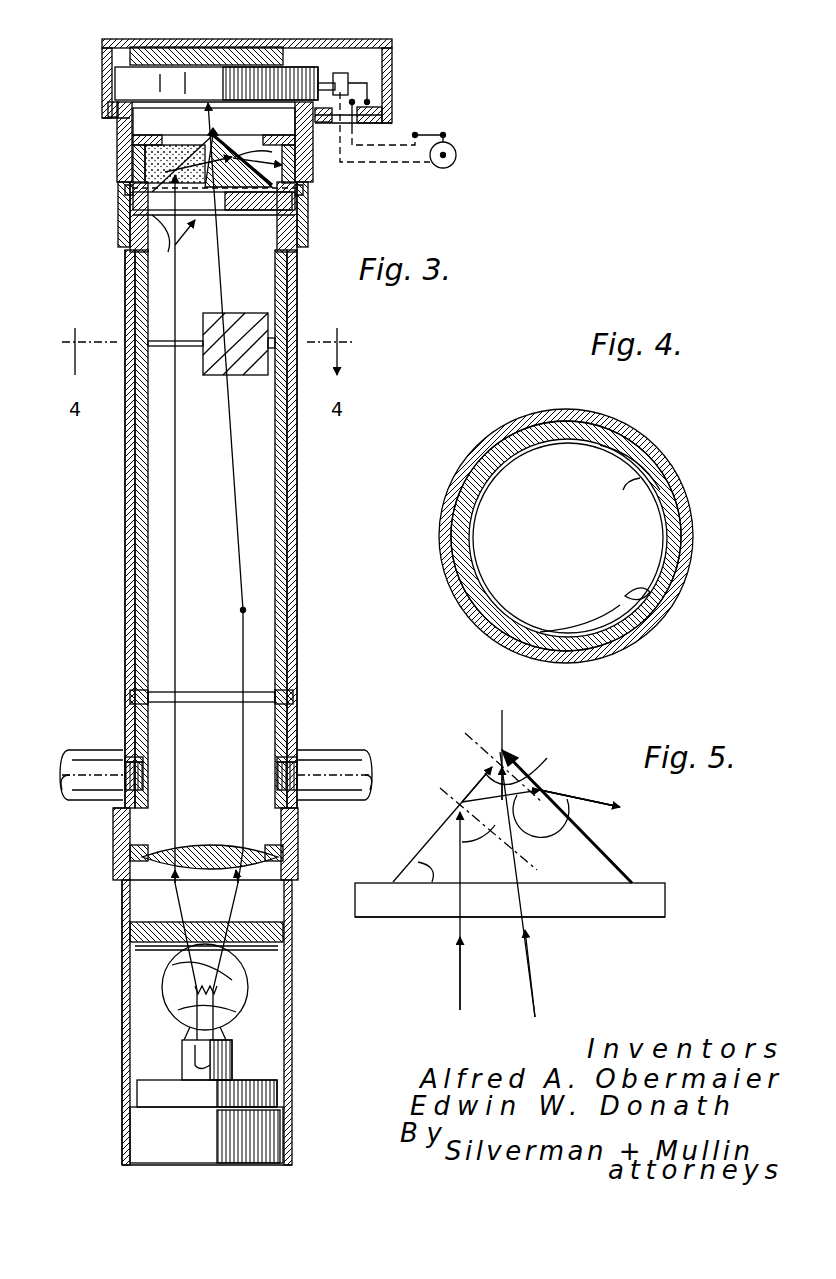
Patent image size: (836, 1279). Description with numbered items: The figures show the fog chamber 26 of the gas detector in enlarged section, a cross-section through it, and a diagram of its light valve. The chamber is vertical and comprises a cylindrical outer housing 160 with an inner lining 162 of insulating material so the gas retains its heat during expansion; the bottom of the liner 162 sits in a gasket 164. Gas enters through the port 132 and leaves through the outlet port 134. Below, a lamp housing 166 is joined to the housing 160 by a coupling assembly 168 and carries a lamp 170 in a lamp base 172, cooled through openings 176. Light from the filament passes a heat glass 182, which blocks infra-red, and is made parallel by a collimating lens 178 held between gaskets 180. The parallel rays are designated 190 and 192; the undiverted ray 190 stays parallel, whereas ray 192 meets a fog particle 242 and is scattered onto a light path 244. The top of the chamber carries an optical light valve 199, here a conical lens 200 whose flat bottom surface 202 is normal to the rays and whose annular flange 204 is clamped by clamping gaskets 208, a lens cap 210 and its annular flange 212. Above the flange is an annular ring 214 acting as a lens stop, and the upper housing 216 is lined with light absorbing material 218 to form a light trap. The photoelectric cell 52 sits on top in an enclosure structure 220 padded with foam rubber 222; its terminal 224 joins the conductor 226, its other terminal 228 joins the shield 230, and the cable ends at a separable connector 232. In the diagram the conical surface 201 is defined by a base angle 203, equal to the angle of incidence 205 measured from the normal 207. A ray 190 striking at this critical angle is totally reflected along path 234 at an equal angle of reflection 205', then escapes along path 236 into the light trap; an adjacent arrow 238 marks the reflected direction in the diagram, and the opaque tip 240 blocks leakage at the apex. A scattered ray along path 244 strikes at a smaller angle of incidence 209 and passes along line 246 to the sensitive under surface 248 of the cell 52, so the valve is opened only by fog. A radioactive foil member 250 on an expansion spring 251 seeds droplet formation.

In FIG. 3, the fog chamber 26 is at (302, 578).
In FIG. 3, the photoelectric cell 52 is at (118, 79).
In FIG. 3, the port 132 is at (140, 758).
In FIG. 3, the outlet port 134 is at (270, 757).
In FIG. 3, the cylindrical outer housing 160 is at (298, 472).
In FIG. 4, the cylindrical outer housing 160 is at (692, 517).
In FIG. 3, the inner lining 162 is at (280, 494).
In FIG. 4, the inner lining 162 is at (665, 568).
In FIG. 3, the gasket 164 is at (130, 688).
In FIG. 3, the lamp housing 166 is at (288, 1042).
In FIG. 3, the coupling assembly 168 is at (293, 860).
In FIG. 3, the lamp 170 is at (167, 978).
In FIG. 3, the lamp base 172 is at (182, 1060).
In FIG. 3, the openings 176 is at (122, 997).
In FIG. 3, the collimating lens 178 is at (227, 840).
In FIG. 3, the gaskets 180 is at (120, 840).
In FIG. 3, the heat glass 182 is at (127, 936).
In FIG. 3, the undiverted ray 190 is at (180, 600).
In FIG. 5, the undiverted ray 190 is at (460, 980).
In FIG. 3, the intercepted ray 192 is at (243, 668).
In FIG. 3, the optical light valve 199 is at (175, 245).
In FIG. 5, the optical light valve 199 is at (633, 840).
In FIG. 3, the conical lens 200 is at (310, 158).
In FIG. 5, the conical lens 200 is at (603, 862).
In FIG. 5, the conical surface 201 is at (420, 838).
In FIG. 3, the flat bottom surface 202 is at (167, 252).
In FIG. 5, the flat bottom surface 202 is at (600, 918).
In FIG. 5, the base angle 203 is at (425, 865).
In FIG. 3, the glass plate 204 is at (140, 206).
In FIG. 5, the glass plate 204 is at (668, 900).
In FIG. 5, the angle of incidence 205 is at (482, 851).
In FIG. 5, the angle of reflection 205' is at (505, 829).
In FIG. 5, the normal 207 is at (440, 767).
In FIG. 3, the clamping gaskets 208 is at (310, 203).
In FIG. 5, the angle of incidence 209 is at (527, 762).
In FIG. 3, the lens cap 210 is at (122, 234).
In FIG. 3, the annular flange 212 is at (130, 179).
In FIG. 3, the annular ring 214 is at (136, 148).
In FIG. 3, the upper housing 216 is at (118, 132).
In FIG. 3, the light absorbing material 218 is at (133, 163).
In FIG. 3, the enclosure structure 220 is at (260, 40).
In FIG. 3, the foam rubber 222 is at (208, 38).
In FIG. 3, the terminal 224 is at (330, 82).
In FIG. 3, the conductor 226 is at (402, 163).
In FIG. 3, the terminal 228 is at (350, 74).
In FIG. 3, the shield 230 is at (415, 134).
In FIG. 3, the separable connector 232 is at (456, 155).
In FIG. 5, the path 234 is at (588, 815).
In FIG. 5, the path 236 is at (600, 797).
In FIG. 5, the ray 238 is at (473, 787).
In FIG. 5, the opaque tip 240 is at (478, 754).
In FIG. 3, the fog particle 242 is at (241, 611).
In FIG. 3, the light path 244 is at (232, 434).
In FIG. 5, the light path 244 is at (535, 1003).
In FIG. 3, the line 246 is at (205, 122).
In FIG. 5, the line 246 is at (502, 713).
In FIG. 3, the sensitive under surface 248 is at (223, 141).
In FIG. 3, the member 250 is at (250, 313).
In FIG. 4, the member 250 is at (640, 478).
In FIG. 3, the expansion spring 251 is at (187, 341).
In FIG. 4, the expansion spring 251 is at (660, 597).